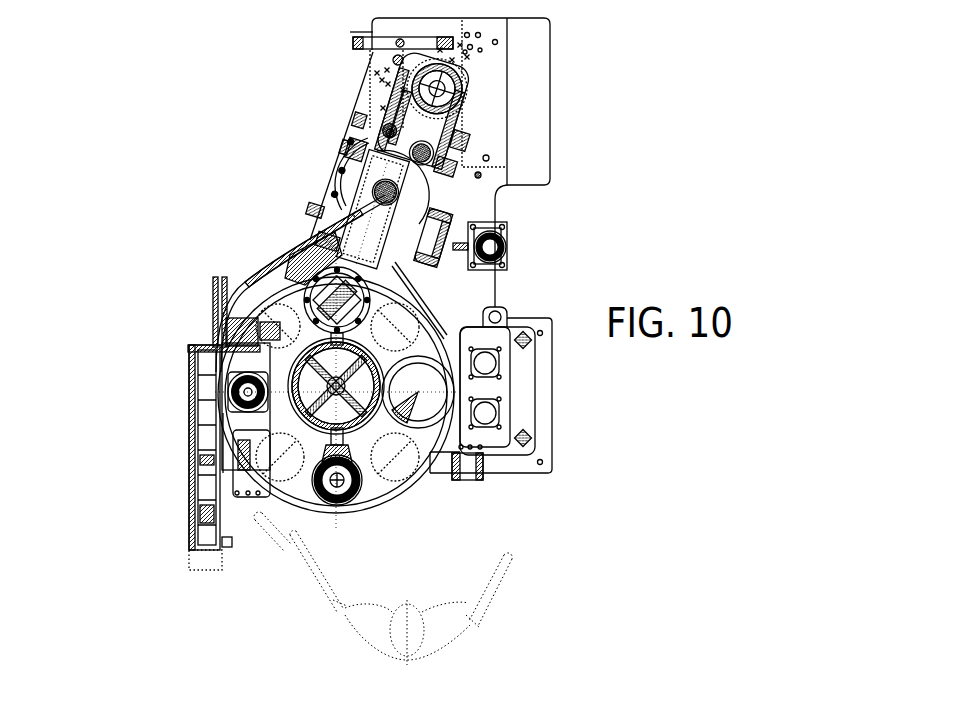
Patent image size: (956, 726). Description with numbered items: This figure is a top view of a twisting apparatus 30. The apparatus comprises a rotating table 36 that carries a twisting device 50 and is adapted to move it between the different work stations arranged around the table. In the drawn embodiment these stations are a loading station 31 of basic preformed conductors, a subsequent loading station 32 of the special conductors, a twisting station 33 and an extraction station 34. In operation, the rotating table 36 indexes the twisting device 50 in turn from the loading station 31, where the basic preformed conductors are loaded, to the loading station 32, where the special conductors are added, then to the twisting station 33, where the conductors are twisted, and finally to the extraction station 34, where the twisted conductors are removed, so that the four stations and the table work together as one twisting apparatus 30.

The twisting apparatus 30 is at (193, 105).
The loading station 31 is at (187, 393).
The loading station of the special conductors 32 is at (337, 513).
The twisting station 33 is at (520, 305).
The extraction station 34 is at (310, 200).
The rotating table 36 is at (258, 284).
The twisting device 50 is at (415, 495).